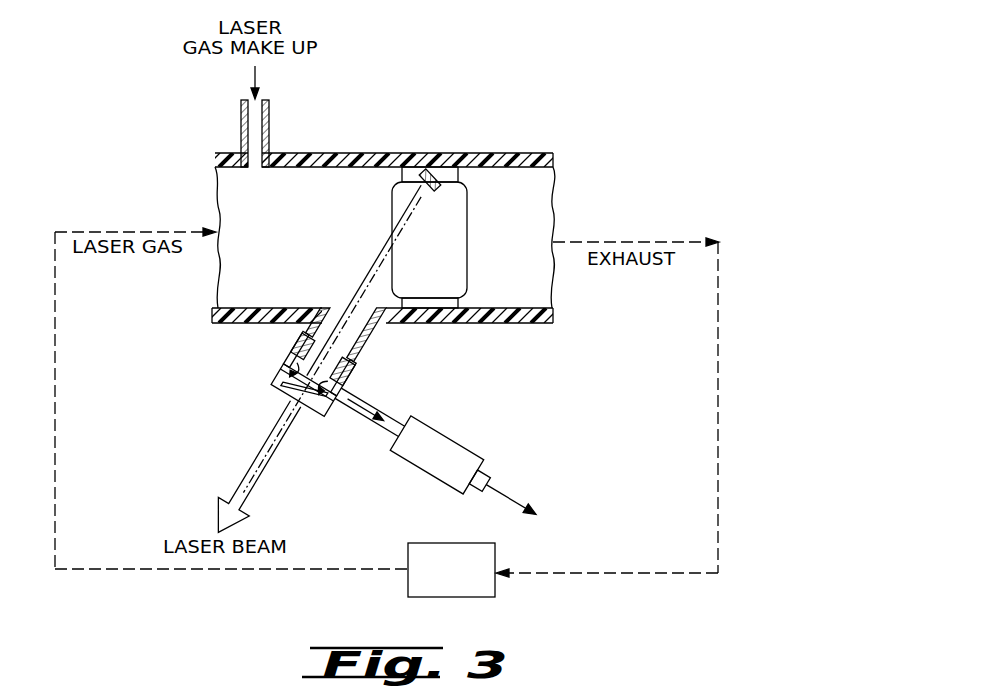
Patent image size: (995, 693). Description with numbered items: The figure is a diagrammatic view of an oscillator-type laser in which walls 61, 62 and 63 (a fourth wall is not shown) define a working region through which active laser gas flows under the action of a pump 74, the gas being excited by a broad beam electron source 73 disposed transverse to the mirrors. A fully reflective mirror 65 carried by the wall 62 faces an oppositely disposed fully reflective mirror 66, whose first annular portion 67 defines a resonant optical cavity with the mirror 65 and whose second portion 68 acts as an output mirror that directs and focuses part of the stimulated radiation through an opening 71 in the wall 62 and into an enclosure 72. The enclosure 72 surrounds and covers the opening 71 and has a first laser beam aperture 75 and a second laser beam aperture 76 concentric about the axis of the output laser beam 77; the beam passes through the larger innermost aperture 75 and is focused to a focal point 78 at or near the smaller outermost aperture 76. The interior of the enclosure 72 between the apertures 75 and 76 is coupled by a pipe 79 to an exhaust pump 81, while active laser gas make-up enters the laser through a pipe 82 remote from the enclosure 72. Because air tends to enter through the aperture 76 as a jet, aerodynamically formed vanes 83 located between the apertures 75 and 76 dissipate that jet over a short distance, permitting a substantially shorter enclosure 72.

The wall 61 is at (513, 157).
The wall 62 is at (512, 325).
The wall 63 is at (523, 224).
The fully reflective mirror 65 is at (445, 309).
The fully reflective mirror 66 is at (372, 180).
The first annular portion 67 is at (412, 168).
The second portion 68 is at (440, 175).
The opening 71 is at (332, 306).
The enclosure 72 is at (273, 349).
The broad beam electron source 73 is at (467, 242).
The pump 74 is at (445, 543).
The first laser beam aperture 75 is at (367, 368).
The second laser beam aperture 76 is at (298, 427).
The output laser beam 77 is at (313, 327).
The focal point 78 is at (273, 406).
The pipe 79 is at (383, 390).
The exhaust pump 81 is at (482, 450).
The pipe 82 is at (270, 122).
The aerodynamically formed vanes 83 is at (297, 399).